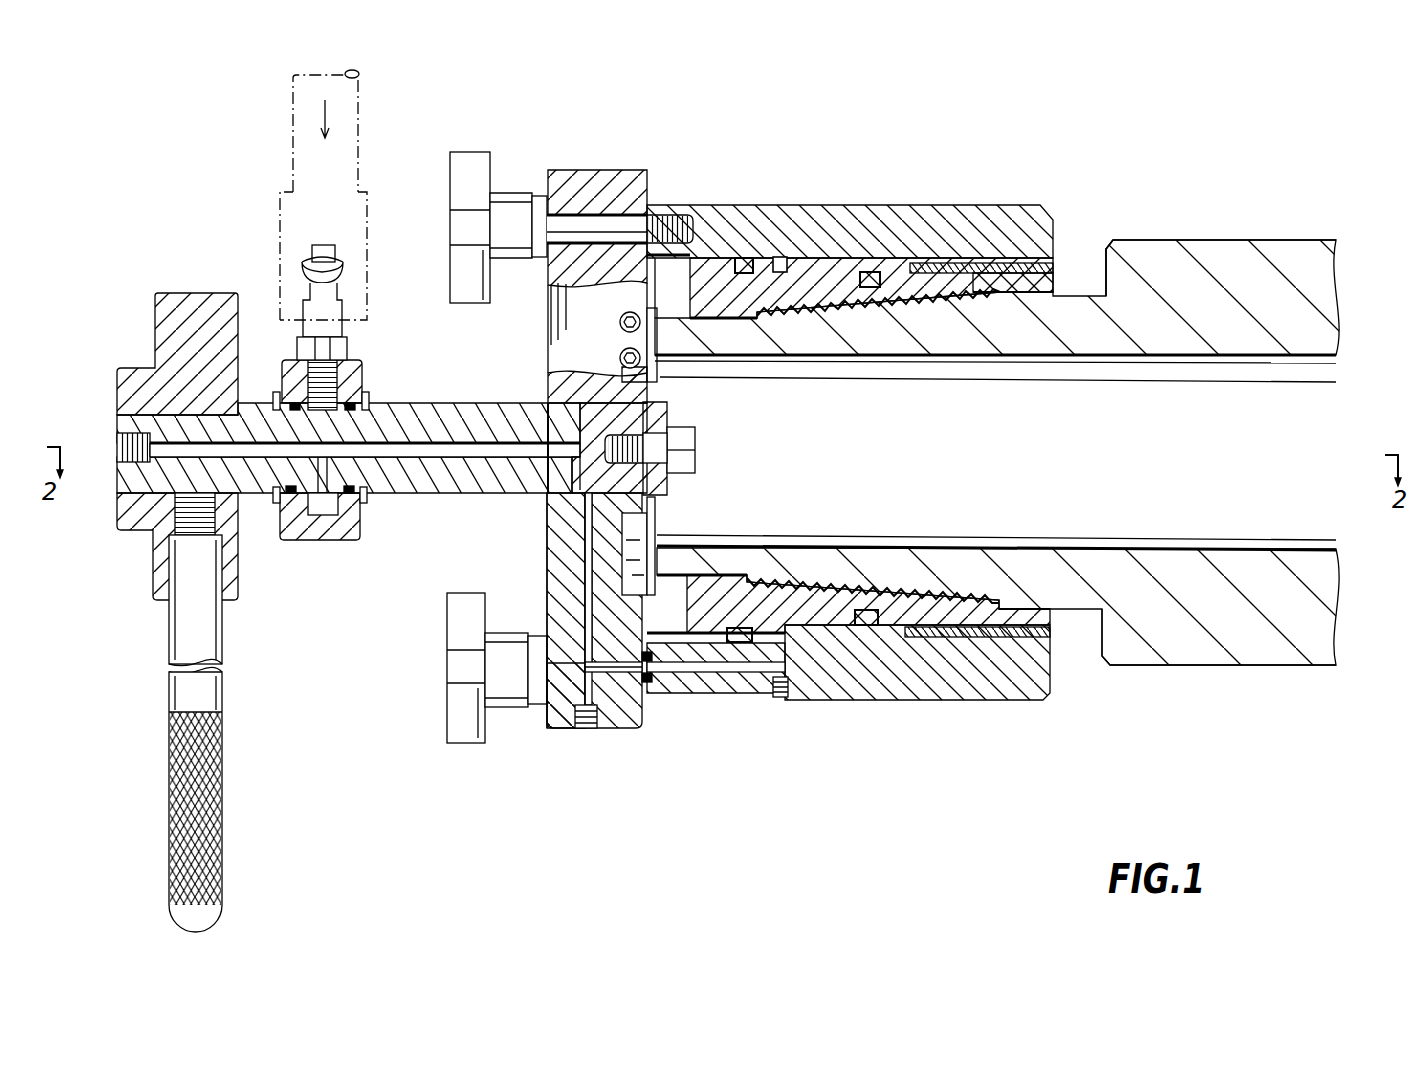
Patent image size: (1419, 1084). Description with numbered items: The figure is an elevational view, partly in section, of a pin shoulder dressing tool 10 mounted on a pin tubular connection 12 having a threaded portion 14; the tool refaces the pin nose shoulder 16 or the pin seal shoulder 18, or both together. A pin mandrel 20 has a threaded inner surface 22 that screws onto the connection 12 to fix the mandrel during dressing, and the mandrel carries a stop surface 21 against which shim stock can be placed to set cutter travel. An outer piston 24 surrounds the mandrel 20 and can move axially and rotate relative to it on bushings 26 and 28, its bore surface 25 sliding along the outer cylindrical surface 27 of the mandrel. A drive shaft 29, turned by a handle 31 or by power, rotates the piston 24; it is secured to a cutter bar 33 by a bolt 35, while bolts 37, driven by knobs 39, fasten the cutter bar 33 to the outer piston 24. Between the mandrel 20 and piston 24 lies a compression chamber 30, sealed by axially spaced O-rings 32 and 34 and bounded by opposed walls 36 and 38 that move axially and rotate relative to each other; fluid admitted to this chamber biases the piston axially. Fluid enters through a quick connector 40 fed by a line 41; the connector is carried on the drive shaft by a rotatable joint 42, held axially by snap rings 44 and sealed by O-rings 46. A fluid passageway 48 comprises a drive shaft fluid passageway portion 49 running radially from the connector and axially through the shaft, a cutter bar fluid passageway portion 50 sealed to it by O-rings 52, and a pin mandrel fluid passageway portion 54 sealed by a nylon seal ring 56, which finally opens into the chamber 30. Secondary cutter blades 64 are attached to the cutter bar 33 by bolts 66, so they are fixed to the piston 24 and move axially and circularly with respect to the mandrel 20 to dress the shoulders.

The pin shoulder dressing tool 10 is at (850, 106).
The pin tubular connection 12 is at (1220, 268).
The threaded portion 14 is at (932, 330).
The pin nose shoulder 16 is at (622, 350).
The pin seal shoulder 18 is at (1096, 258).
The pin mandrel 20 is at (868, 262).
The stop surface 21 is at (700, 250).
The threaded inner surface 22 is at (832, 610).
The outer piston 24 is at (992, 680).
The bore surface 25 is at (905, 278).
The bushing 26 is at (745, 258).
The outer cylindrical surface 27 is at (833, 292).
The bushing 28 is at (1013, 262).
The drive shaft 29 is at (410, 482).
The compression chamber 30 is at (762, 668).
The handle 31 is at (225, 738).
The O-ring 32 is at (870, 628).
The cutter bar 33 is at (585, 170).
The O-ring 34 is at (738, 645).
The bolt 35 is at (695, 438).
The opposed wall 36 is at (836, 287).
The bolt 37 is at (620, 230).
The opposed wall 38 is at (783, 258).
The knob 39 is at (468, 152).
The quick connector 40 is at (315, 250).
The line 41 is at (290, 100).
The rotatable joint 42 is at (283, 520).
The snap ring 44 is at (366, 400).
The O-ring 46 is at (335, 498).
The fluid passageway 48 is at (480, 455).
The drive shaft fluid passageway portion 49 is at (428, 445).
The cutter bar fluid passageway portion 50 is at (583, 660).
The O-ring 52 is at (555, 485).
The pin mandrel fluid passageway portion 54 is at (672, 668).
The nylon seal ring 56 is at (640, 678).
The secondary cutter blade 64 is at (637, 535).
The bolt 66 is at (618, 322).